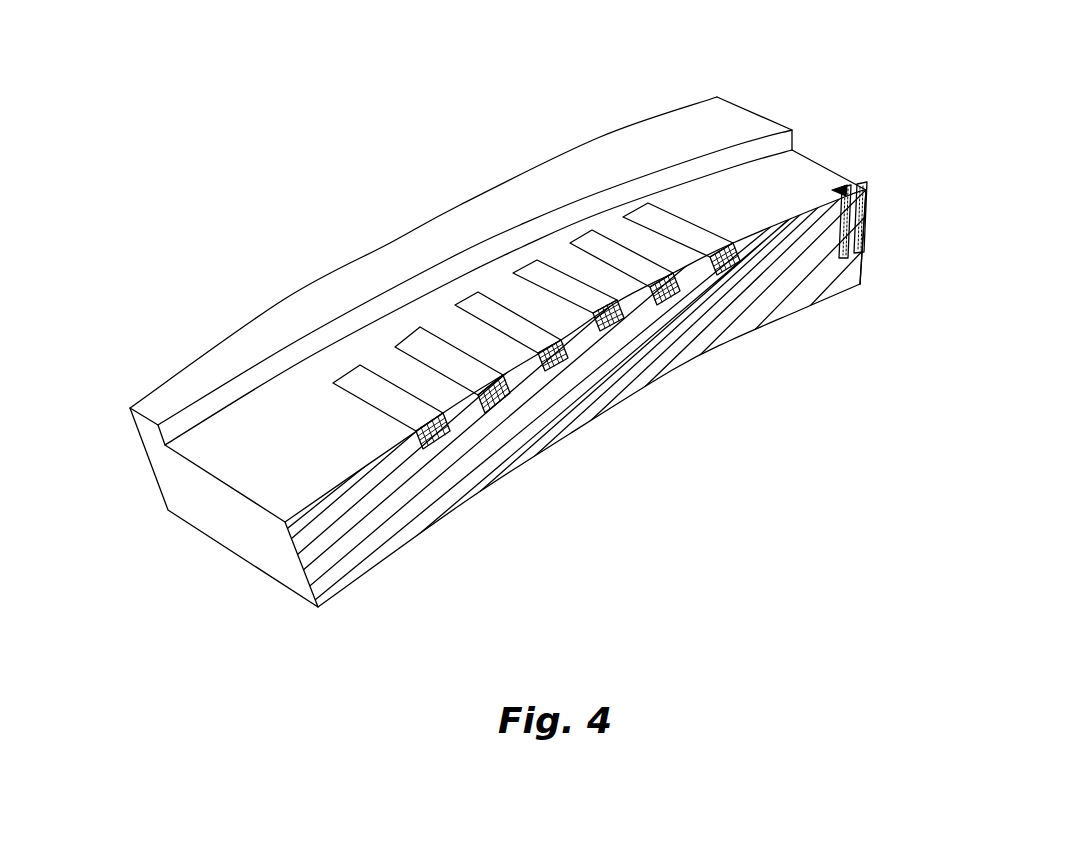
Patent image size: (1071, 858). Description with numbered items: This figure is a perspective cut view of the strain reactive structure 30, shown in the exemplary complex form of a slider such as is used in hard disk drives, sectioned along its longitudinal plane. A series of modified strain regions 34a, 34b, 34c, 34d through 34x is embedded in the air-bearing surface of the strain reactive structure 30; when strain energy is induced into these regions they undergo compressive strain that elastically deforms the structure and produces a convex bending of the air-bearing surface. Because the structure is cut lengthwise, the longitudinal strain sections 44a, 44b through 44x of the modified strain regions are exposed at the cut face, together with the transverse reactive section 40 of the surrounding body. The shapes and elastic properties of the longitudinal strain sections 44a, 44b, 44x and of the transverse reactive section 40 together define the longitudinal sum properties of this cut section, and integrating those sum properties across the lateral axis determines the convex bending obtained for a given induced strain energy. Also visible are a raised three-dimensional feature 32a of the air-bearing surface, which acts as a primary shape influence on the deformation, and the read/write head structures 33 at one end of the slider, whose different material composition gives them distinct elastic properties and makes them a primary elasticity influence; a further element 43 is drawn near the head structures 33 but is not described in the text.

The strain reactive structure 30 is at (162, 467).
The three-dimensional feature 32a is at (740, 122).
The read/write head structures 33 is at (847, 183).
The modified strain region 34a is at (345, 370).
The modified strain region 34b is at (412, 340).
The modified strain region 34c is at (475, 292).
The modified strain region 34d is at (537, 260).
The modified strain region 34x is at (648, 203).
The transverse reactive section 40 is at (332, 580).
The right end edge 43 is at (868, 220).
The longitudinal strain section 44a is at (440, 449).
The longitudinal strain section 44b is at (493, 405).
The longitudinal strain section 44x is at (724, 270).